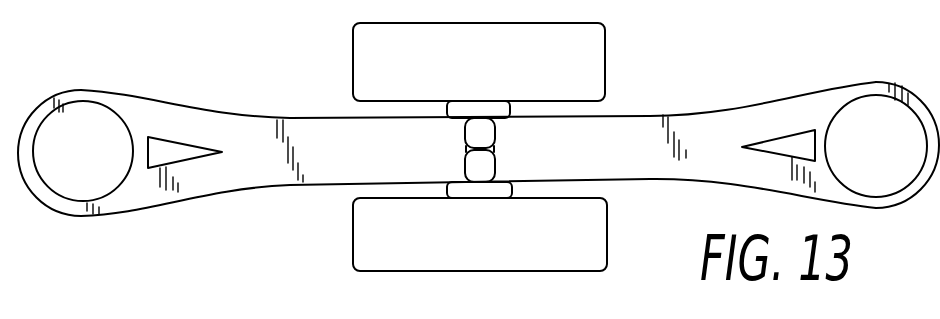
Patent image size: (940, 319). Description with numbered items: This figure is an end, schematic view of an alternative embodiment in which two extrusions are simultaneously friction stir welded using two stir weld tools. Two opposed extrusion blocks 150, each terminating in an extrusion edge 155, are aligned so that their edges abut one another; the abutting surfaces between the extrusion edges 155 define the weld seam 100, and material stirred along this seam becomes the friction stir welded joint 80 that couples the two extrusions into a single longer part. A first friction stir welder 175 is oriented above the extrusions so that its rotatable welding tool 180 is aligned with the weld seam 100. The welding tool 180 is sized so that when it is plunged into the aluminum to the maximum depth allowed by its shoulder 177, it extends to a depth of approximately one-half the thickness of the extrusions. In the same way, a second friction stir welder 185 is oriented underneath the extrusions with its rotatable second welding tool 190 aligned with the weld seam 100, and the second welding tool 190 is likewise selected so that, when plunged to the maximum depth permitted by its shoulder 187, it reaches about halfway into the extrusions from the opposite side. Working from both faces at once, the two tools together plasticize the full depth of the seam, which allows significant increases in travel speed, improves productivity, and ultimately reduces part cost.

The friction stir welded joint 80 is at (478, 108).
The weld seam 100 is at (476, 151).
The extrusion blocks 150 is at (256, 162).
The extrusion edges 155 is at (463, 150).
The first friction stir welder 175 is at (594, 38).
The shoulder 177 is at (505, 108).
The welding tool 180 is at (480, 134).
The second friction stir welder 185 is at (362, 236).
The shoulder 187 is at (512, 188).
The second welding tool 190 is at (463, 167).